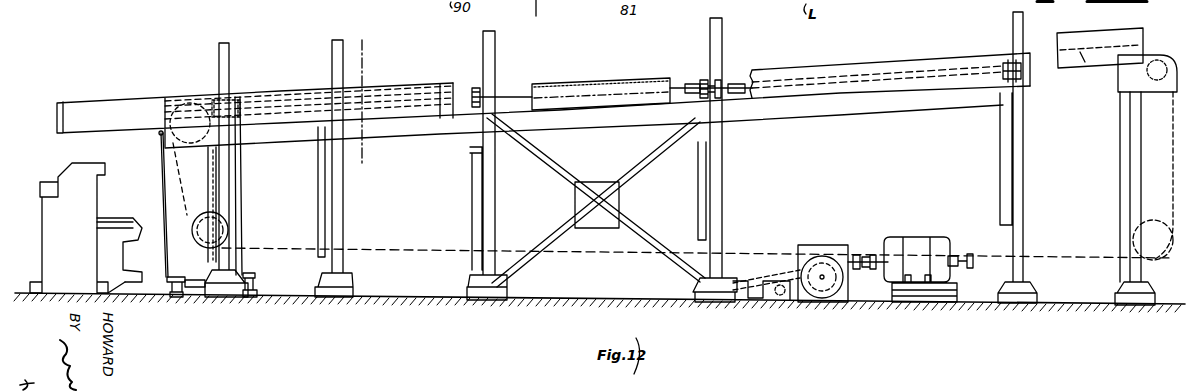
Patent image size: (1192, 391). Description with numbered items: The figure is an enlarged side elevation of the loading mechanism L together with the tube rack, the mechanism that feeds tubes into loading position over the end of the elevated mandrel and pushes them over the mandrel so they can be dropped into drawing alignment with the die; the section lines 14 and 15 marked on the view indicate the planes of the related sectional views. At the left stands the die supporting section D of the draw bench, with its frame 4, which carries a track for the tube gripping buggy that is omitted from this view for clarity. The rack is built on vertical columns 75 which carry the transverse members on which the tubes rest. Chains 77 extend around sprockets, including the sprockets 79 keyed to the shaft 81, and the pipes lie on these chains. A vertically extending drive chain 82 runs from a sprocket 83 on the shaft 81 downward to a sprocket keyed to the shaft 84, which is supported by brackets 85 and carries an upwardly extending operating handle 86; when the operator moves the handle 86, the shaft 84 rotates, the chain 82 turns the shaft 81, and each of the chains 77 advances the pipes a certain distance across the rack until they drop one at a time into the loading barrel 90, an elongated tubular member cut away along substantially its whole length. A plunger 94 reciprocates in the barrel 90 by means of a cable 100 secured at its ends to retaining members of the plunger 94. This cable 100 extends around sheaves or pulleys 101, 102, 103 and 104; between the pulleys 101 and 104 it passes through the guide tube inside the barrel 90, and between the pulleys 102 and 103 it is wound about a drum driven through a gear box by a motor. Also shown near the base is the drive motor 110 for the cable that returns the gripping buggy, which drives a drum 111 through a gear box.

The plunger 94 is at (89, 109).
The loading barrel 90 is at (410, 88).
The sprocket 83 is at (240, 102).
The pulley 101 is at (168, 124).
The section line 14- 14 is at (362, 162).
The section line 15- 15 is at (536, 12).
The sprocket 79 is at (696, 86).
The chains 77 is at (706, 80).
The shaft 81 is at (730, 84).
The loading mechanism L is at (842, 70).
The vertical columns 75 is at (343, 201).
The drive chain 82 is at (240, 187).
The operating handle 86 is at (164, 168).
The pulley 102 is at (225, 226).
The shaft 84 is at (201, 281).
The brackets 85 is at (172, 297).
The die supporting section D is at (44, 243).
The frame 4 is at (115, 237).
The cable 100 is at (760, 253).
The drum 111 is at (840, 248).
The drive motor 110 is at (920, 243).
The pulley 104 is at (1150, 59).
The pulley 103 is at (1150, 223).